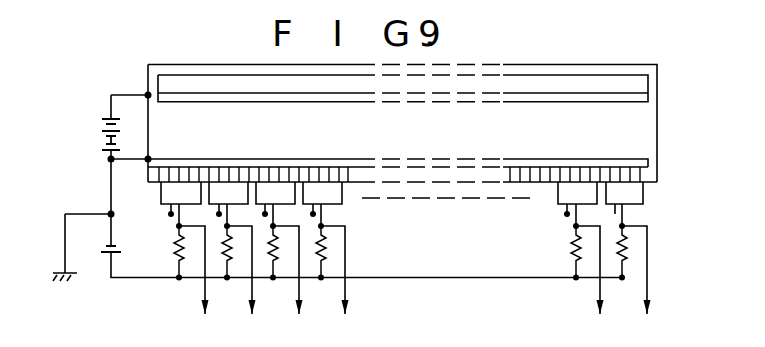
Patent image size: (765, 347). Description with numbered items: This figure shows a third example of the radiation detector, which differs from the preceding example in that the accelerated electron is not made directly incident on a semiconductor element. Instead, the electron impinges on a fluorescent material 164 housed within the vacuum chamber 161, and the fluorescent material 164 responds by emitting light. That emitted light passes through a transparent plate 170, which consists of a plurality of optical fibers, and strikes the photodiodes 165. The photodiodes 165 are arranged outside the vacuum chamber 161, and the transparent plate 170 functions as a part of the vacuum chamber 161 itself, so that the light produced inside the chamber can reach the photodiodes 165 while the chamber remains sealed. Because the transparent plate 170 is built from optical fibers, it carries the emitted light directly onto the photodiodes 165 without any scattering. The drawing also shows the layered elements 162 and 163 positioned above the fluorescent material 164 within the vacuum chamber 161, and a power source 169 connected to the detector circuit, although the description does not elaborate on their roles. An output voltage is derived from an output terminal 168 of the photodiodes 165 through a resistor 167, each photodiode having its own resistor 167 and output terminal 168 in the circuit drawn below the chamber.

The vacuum chamber 161 is at (657, 64).
The upper electrode plate 162 is at (650, 80).
The lower electrode plate 163 is at (651, 102).
The fluorescent material 164 is at (657, 158).
The transparent plate 170 is at (658, 182).
The photodiodes 165 is at (644, 201).
The resistor 167 is at (630, 250).
The output terminal 168 is at (648, 286).
The battery 169 is at (102, 137).